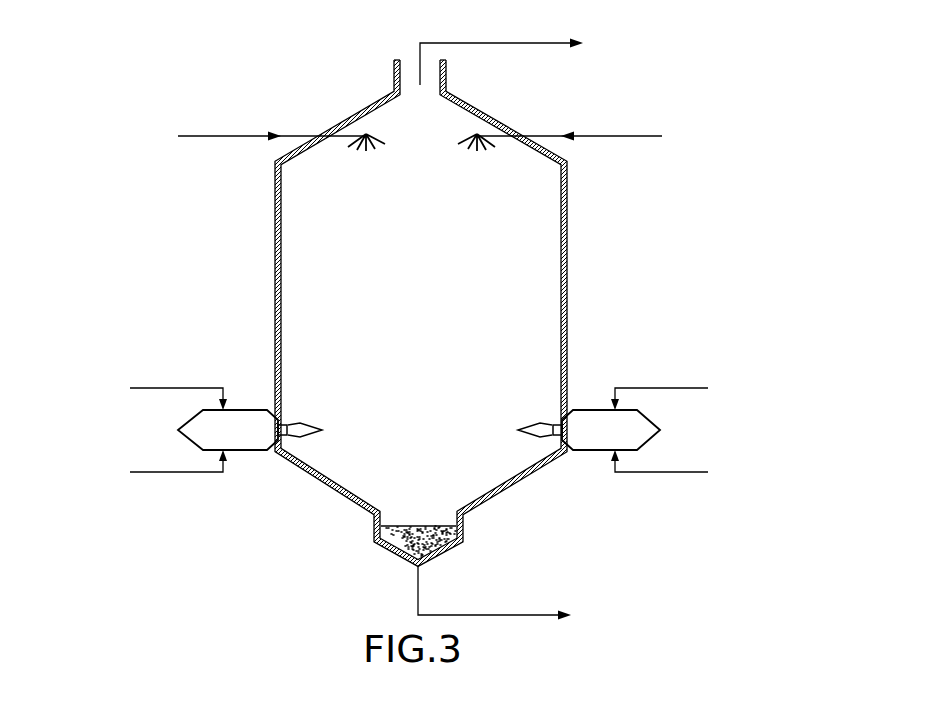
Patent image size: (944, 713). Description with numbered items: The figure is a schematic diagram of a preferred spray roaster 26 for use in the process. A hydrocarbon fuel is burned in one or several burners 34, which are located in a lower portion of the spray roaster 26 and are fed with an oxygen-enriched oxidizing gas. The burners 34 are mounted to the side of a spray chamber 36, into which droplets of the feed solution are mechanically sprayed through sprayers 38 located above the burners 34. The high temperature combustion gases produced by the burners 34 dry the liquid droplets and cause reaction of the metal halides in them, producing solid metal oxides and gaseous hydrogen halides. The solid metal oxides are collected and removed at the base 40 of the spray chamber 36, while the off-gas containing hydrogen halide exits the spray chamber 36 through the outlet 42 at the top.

The spray roaster 26 is at (273, 252).
The burners 34 is at (248, 452).
The spray chamber 36 is at (432, 322).
The sprayers 38 is at (367, 133).
The base 40 is at (400, 557).
The outlet 42 is at (412, 57).